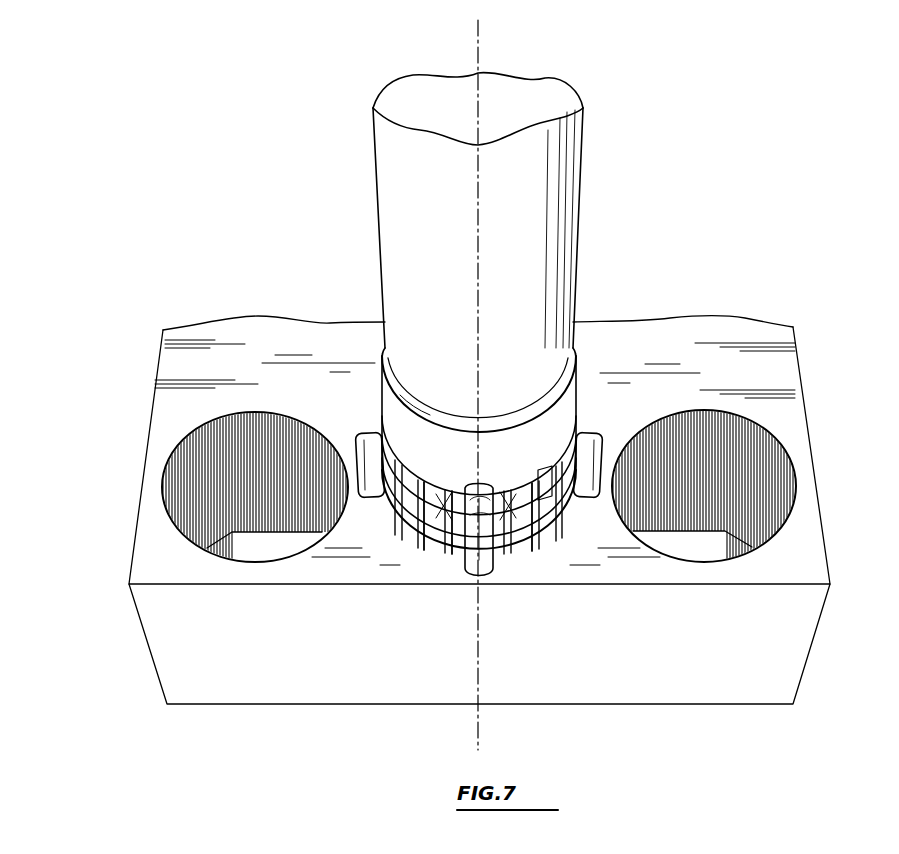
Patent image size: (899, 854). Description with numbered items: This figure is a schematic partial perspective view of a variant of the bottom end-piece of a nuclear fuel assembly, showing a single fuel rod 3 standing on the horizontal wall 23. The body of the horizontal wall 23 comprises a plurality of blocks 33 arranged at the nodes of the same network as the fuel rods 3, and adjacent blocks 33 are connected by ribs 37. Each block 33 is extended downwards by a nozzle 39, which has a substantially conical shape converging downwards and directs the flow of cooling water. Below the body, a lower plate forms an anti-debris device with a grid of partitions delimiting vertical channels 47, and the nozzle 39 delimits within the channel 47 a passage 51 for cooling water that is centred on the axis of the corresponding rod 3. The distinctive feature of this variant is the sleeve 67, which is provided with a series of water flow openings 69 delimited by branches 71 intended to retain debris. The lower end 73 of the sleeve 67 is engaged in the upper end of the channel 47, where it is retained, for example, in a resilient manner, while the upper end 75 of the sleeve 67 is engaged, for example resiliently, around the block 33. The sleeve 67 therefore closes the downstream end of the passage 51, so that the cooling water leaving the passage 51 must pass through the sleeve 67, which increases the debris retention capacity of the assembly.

The fuel rod 3 is at (586, 178).
The horizontal wall 23 is at (770, 372).
The block 33 is at (512, 420).
The rib 37 is at (372, 432).
The nozzle 39 is at (430, 512).
The channel 47 is at (212, 477).
The passage 51 is at (456, 546).
The sleeve 67 is at (450, 445).
The water flow opening 69 is at (553, 470).
The branch 71 is at (548, 540).
The lower end of the sleeve 73 is at (432, 548).
The upper end of the sleeve 75 is at (414, 406).